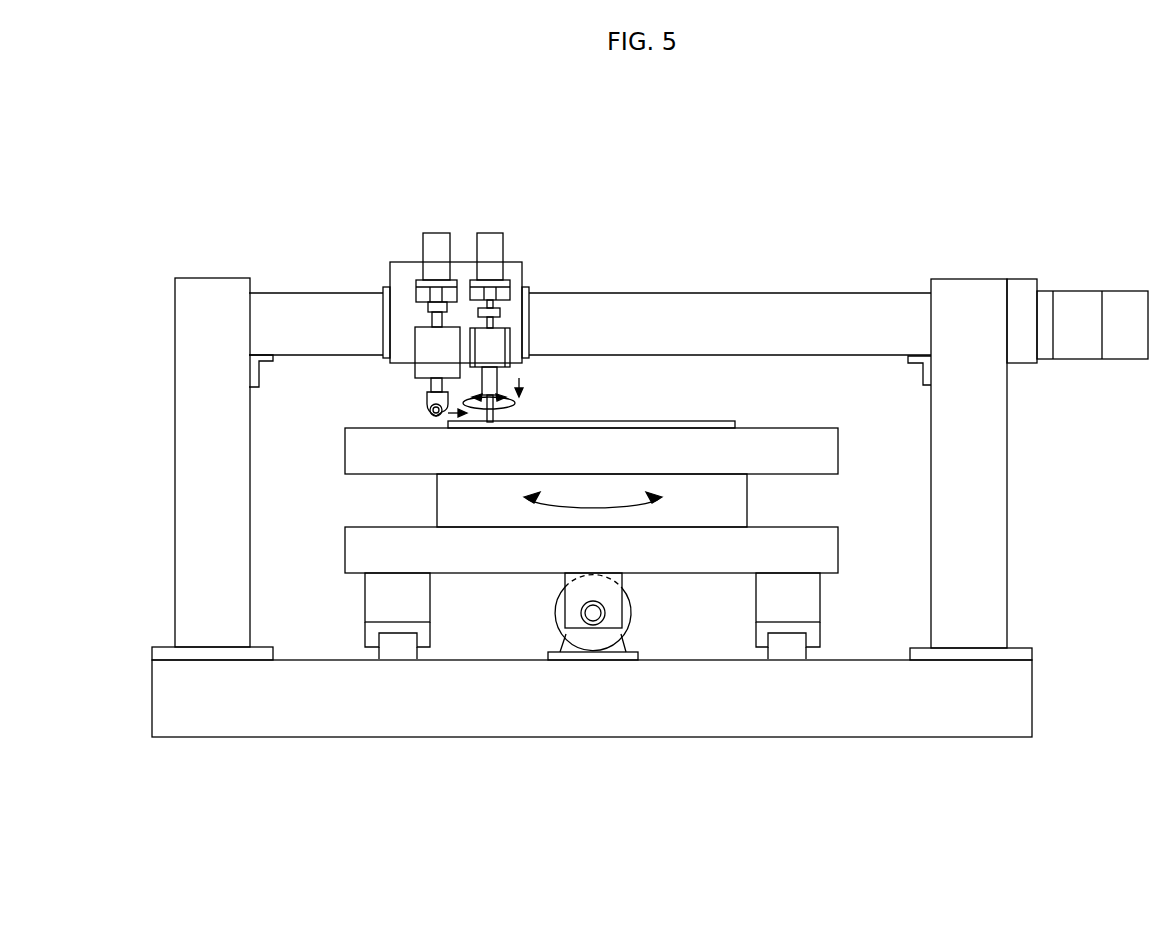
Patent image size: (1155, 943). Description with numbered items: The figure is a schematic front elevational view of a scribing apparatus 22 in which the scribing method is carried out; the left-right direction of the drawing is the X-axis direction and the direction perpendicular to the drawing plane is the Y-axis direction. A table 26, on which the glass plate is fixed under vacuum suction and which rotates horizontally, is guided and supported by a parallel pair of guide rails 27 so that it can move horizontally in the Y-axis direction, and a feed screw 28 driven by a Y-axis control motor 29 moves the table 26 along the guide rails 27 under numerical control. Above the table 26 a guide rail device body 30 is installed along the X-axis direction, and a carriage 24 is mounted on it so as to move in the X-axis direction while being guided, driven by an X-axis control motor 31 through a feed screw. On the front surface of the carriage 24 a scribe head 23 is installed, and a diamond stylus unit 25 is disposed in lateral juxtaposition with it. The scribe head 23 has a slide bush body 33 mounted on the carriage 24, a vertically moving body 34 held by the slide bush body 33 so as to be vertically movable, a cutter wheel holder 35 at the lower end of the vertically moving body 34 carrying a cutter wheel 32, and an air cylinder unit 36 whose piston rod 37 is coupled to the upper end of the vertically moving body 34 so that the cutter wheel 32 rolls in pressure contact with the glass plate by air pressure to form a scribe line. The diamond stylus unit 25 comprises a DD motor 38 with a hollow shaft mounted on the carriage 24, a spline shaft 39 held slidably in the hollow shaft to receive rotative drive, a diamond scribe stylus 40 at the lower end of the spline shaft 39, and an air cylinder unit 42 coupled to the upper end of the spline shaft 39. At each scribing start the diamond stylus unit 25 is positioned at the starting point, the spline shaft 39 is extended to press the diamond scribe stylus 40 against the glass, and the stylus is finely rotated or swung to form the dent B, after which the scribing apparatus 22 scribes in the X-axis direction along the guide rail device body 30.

The scribing apparatus 22 is at (958, 277).
The scribe head 23 is at (412, 316).
The carriage 24 is at (410, 297).
The diamond stylus unit 25 is at (524, 311).
The table 26 is at (791, 451).
The guide rails 27 is at (397, 649).
The feed screw 28 is at (593, 614).
The Y-axis control motor 29 is at (593, 635).
The guide rail device body 30 is at (722, 304).
The X-axis control motor 31 is at (1078, 303).
The cutter wheel 32 is at (428, 412).
The slide bush body 33 is at (420, 336).
The vertically moving body 34 is at (437, 387).
The cutter wheel holder 35 is at (430, 403).
The air cylinder unit 36 is at (440, 249).
The piston rod 37 is at (437, 291).
The DD motor 38 is at (494, 350).
The spline shaft 39 is at (491, 378).
The diamond scribe stylus 40 is at (495, 418).
The air cylinder unit 42 is at (489, 248).
The dent B is at (490, 421).